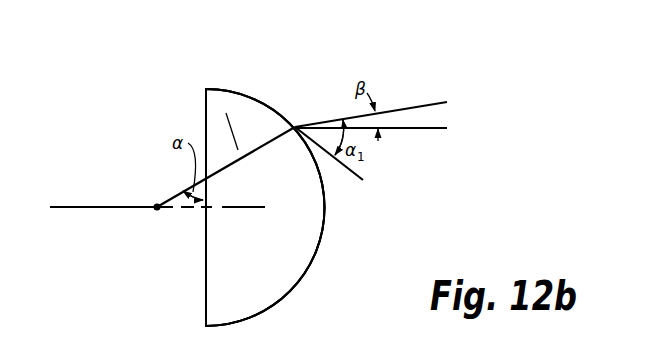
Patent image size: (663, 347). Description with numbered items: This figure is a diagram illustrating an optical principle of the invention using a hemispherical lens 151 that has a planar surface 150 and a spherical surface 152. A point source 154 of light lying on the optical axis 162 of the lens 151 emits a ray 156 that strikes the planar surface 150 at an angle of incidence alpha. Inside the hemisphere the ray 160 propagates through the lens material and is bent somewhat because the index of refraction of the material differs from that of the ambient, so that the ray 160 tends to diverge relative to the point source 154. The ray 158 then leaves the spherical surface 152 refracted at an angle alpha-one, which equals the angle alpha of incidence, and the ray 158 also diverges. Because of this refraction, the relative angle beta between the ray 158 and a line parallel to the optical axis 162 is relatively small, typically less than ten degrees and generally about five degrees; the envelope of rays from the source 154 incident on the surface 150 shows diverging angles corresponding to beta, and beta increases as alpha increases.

The planar surface 150 is at (205, 278).
The hemispherical lens 151 is at (300, 293).
The spherical surface 152 is at (325, 225).
The point source 154 is at (157, 207).
The ray 156 is at (168, 196).
The refracted ray 158 is at (410, 107).
The ray propagating through the hemisphere 160 is at (226, 113).
The optical axis 162 is at (72, 208).